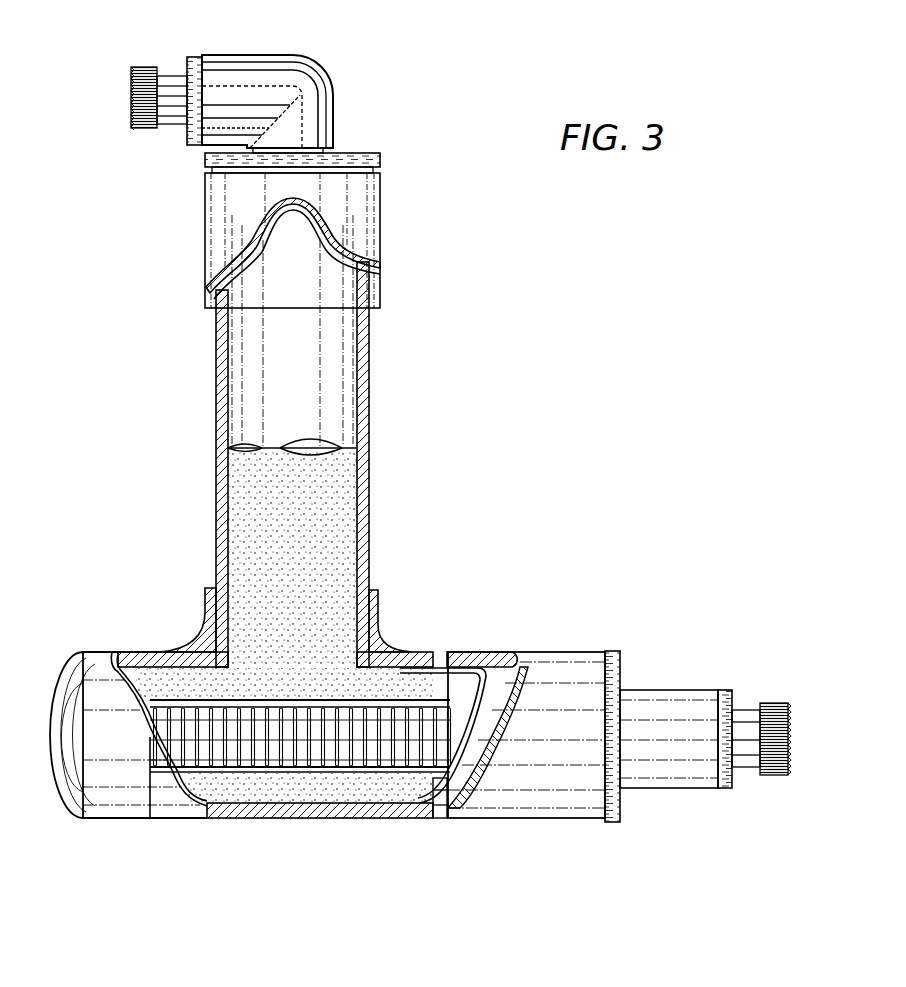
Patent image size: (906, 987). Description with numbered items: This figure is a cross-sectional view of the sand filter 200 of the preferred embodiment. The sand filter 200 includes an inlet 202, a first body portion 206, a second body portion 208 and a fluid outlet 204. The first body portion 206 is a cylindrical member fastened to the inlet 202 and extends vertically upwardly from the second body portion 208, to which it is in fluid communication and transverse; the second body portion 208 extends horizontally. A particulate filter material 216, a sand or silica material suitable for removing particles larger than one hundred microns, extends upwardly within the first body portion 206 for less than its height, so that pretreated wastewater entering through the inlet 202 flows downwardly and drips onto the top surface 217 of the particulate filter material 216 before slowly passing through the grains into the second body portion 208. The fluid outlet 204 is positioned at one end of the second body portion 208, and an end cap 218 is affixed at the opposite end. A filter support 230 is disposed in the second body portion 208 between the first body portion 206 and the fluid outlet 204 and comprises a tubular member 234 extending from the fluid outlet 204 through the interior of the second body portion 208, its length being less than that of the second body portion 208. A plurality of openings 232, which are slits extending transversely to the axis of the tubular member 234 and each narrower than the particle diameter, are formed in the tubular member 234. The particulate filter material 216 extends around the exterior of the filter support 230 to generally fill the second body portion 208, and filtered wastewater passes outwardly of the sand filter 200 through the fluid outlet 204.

The sand filter 200 is at (430, 355).
The inlet 202 is at (297, 55).
The fluid outlet 204 is at (762, 695).
The first body portion 206 is at (217, 392).
The second body portion 208 is at (562, 821).
The particulate filter material 216 is at (232, 528).
The top surface 217 is at (340, 447).
The end cap 218 is at (110, 818).
The filter support 230 is at (343, 777).
The openings 232 is at (305, 765).
The tubular member 234 is at (365, 702).